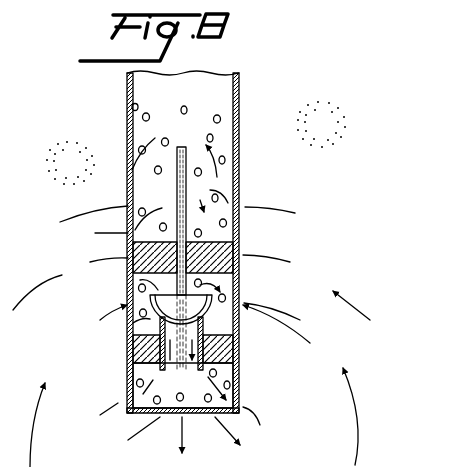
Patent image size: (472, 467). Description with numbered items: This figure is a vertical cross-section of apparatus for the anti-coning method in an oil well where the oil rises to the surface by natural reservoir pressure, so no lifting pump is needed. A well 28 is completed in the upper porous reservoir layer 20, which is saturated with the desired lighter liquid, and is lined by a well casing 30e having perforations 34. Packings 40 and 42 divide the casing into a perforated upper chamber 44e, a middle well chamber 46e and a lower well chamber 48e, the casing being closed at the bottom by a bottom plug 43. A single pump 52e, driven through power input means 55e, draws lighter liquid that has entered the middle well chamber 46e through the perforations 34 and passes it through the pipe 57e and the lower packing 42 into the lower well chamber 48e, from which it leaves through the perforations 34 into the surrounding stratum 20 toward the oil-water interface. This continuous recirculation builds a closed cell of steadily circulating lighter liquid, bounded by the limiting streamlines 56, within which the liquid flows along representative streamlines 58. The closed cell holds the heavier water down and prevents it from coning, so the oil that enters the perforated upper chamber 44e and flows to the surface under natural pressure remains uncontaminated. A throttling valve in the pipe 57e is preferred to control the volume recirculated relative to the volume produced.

The upper porous reservoir layer 20 is at (196, 143).
The well 28 is at (133, 110).
The well casing 30e is at (239, 90).
The perforations 34 is at (240, 153).
The packing 40 is at (240, 250).
The packing 42 is at (240, 355).
The bottom plug 43 is at (170, 417).
The upper chamber 44e is at (180, 215).
The middle well chamber 46e is at (196, 342).
The lower well chamber 48e is at (183, 385).
The pump 52e is at (181, 309).
The power input means 55e is at (192, 137).
The limiting streamlines 56 is at (191, 274).
The pipe 57e is at (133, 323).
The streamlines 58 is at (194, 407).